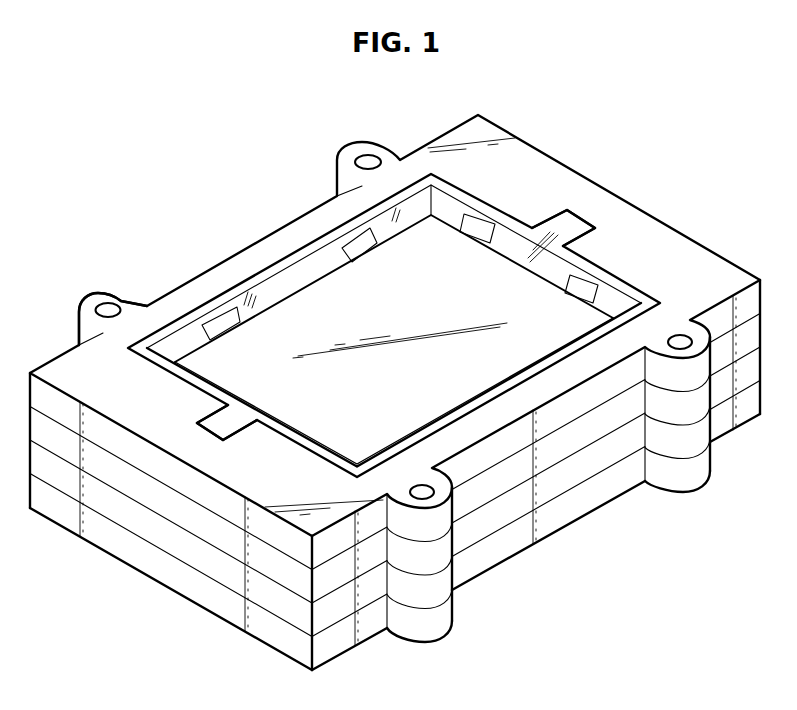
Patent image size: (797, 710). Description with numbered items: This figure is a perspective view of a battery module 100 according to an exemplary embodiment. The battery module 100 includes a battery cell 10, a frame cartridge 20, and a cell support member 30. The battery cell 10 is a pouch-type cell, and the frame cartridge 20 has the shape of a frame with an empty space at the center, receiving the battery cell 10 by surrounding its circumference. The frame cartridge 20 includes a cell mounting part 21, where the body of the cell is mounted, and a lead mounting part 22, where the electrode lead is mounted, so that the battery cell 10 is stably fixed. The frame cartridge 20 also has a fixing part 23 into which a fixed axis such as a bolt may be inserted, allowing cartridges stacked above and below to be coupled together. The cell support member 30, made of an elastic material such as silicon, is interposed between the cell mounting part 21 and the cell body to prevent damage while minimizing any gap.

The battery module 100 is at (196, 170).
The battery cell 10 is at (322, 310).
The frame cartridge 20 is at (548, 175).
The cell mounting part 21 is at (267, 293).
The lead mounting part 22 is at (573, 226).
The fixing part 23 is at (107, 297).
The cell support member 30 is at (357, 243).